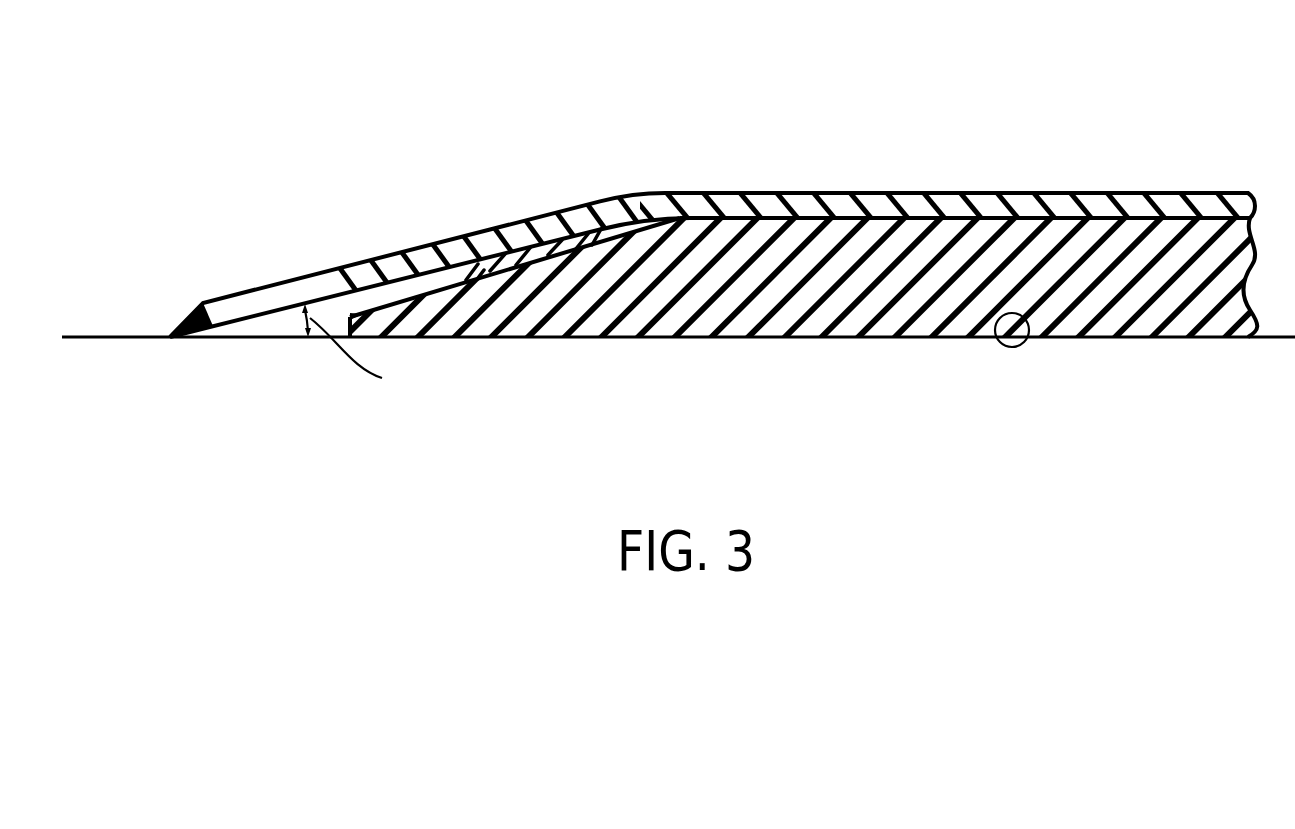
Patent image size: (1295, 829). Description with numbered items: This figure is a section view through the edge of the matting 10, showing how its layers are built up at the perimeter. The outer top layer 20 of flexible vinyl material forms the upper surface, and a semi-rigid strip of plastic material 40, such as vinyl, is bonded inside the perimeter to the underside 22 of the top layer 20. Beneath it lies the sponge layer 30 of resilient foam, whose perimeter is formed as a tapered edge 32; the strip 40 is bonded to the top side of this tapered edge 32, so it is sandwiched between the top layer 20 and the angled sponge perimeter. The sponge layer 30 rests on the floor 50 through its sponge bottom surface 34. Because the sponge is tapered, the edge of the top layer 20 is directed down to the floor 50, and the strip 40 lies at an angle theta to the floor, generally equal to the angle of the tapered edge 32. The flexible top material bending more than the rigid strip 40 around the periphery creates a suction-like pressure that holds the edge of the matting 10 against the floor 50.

The matting 10 is at (1058, 132).
The outer/top layer 20 is at (795, 204).
The underside 22 is at (412, 275).
The sponge layer 30 is at (813, 323).
The tapered edge 32 is at (390, 303).
The sponge bottom surface 34 is at (1028, 346).
The strip of plastic material 40 is at (549, 246).
The floor 50 is at (123, 337).